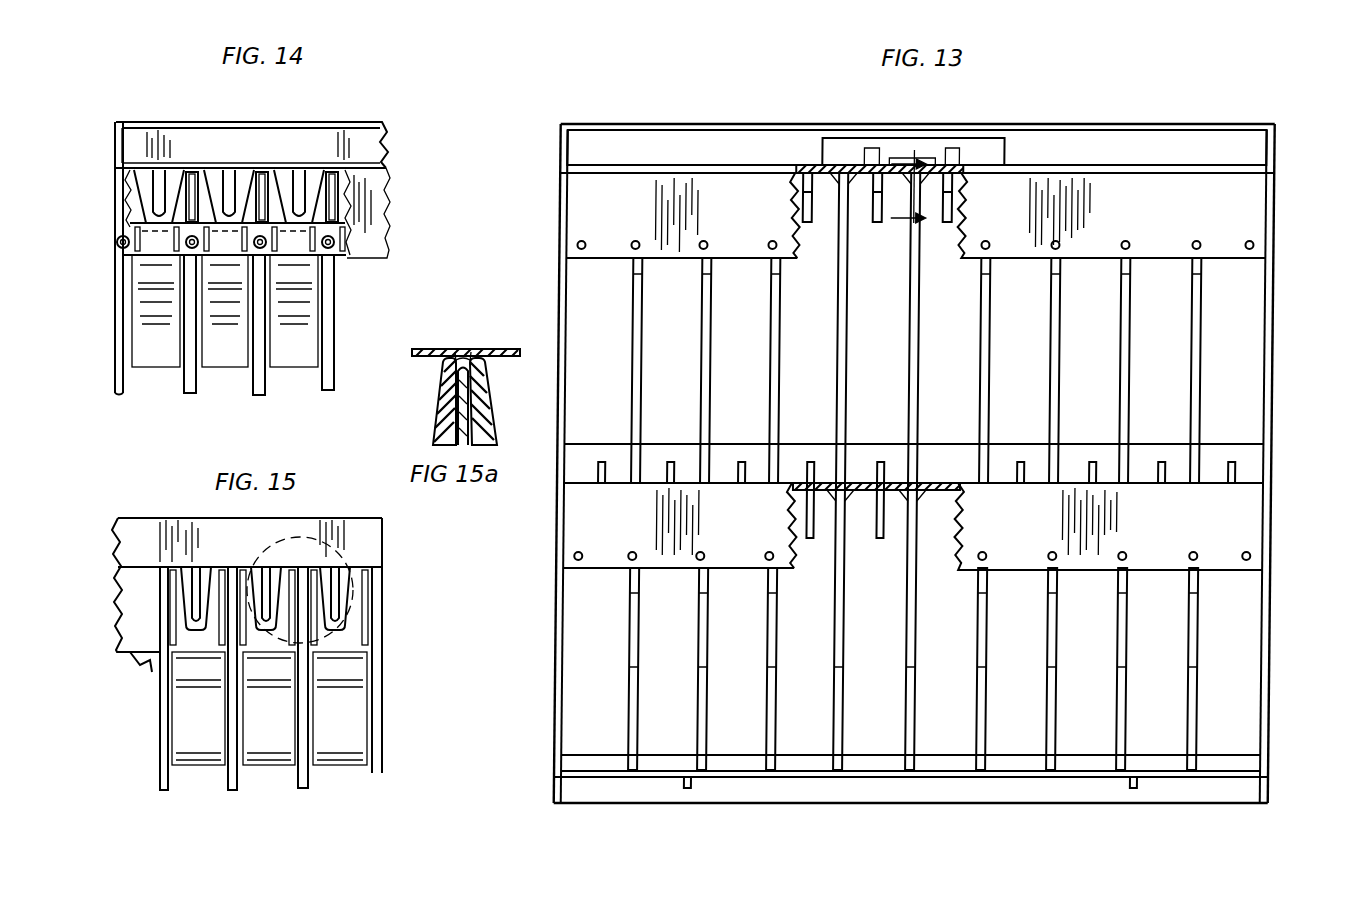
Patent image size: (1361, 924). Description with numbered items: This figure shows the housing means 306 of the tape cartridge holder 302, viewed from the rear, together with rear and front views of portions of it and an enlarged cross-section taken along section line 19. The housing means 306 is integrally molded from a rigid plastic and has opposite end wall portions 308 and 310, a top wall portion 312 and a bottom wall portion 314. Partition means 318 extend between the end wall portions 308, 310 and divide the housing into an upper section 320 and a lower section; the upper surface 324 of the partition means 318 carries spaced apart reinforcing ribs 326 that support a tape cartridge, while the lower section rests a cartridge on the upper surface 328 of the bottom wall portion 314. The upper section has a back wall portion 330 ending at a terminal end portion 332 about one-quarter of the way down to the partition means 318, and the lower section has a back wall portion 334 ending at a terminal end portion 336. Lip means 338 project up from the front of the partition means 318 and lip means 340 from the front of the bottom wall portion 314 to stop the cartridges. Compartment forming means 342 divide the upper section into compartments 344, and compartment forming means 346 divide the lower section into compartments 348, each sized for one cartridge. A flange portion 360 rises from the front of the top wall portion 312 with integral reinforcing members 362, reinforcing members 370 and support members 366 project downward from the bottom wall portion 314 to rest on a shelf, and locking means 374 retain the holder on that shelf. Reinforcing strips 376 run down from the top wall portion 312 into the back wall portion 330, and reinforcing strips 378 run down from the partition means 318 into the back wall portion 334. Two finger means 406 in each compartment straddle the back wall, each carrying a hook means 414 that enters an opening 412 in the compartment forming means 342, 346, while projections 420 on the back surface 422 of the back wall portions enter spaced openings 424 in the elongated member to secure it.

In FIG. 13, the holder 302 is at (938, 90).
In FIG. 13, the housing means 306 is at (1296, 466).
In FIG. 13, the end wall portion 308 is at (563, 300).
In FIG. 13, the end wall portion 310 is at (1277, 288).
In FIG. 13, the top wall portion 312 is at (1117, 172).
In FIG. 15A, the top wall portion 312 is at (463, 351).
In FIG. 13, the bottom wall portion 314 is at (989, 774).
In FIG. 13, the partition means 318 is at (869, 479).
In FIG. 13, the upper section 320 is at (1309, 348).
In FIG. 13, the upper surface 324 is at (897, 485).
In FIG. 13, the reinforcing ribs 326 is at (1163, 462).
In FIG. 13, the upper surface 328 is at (920, 776).
In FIG. 13, the back wall portion 330 is at (738, 223).
In FIG. 13, the terminal end portion 332 is at (726, 264).
In FIG. 13, the back wall portion 334 is at (736, 540).
In FIG. 13, the terminal end portion 336 is at (730, 572).
In FIG. 13, the lip means 338 is at (674, 452).
In FIG. 13, the lip means 340 is at (659, 766).
In FIG. 13, the compartment forming means 342 is at (779, 352).
In FIG. 14, the compartment forming means 342 is at (224, 258).
In FIG. 15, the compartment forming means 342 is at (237, 701).
In FIG. 15A, the compartment forming means 342 is at (458, 420).
In FIG. 13, the compartments 344 is at (582, 350).
In FIG. 13, the compartment forming means 346 is at (777, 722).
In FIG. 13, the compartments 348 is at (586, 717).
In FIG. 13, the flange portion 360 is at (607, 133).
In FIG. 15, the flange portion 360 is at (148, 532).
In FIG. 13, the reinforcing member 362 is at (564, 160).
In FIG. 13, the support members 366 is at (692, 778).
In FIG. 13, the reinforcing member 370 is at (563, 790).
In FIG. 13, the locking means 374 is at (936, 139).
In FIG. 13, the reinforcing strips 376 is at (946, 208).
In FIG. 15, the reinforcing strips 376 is at (267, 567).
In FIG. 13, the reinforcing strips 378 is at (820, 538).
In FIG. 14, the finger means 406 is at (138, 172).
In FIG. 15, the finger means 406 is at (326, 597).
In FIG. 15A, the finger means 406 is at (441, 388).
In FIG. 14, the opening 412 is at (254, 177).
In FIG. 15A, the opening 412 is at (460, 362).
In FIG. 14, the hook means 414 is at (247, 173).
In FIG. 15A, the hook means 414 is at (453, 356).
In FIG. 13, the projections 420 is at (1250, 242).
In FIG. 14, the projections 420 is at (265, 248).
In FIG. 13, the back surface 422 is at (577, 209).
In FIG. 14, the openings 424 is at (128, 255).
In FIG. 13, the section line 19 is at (904, 181).